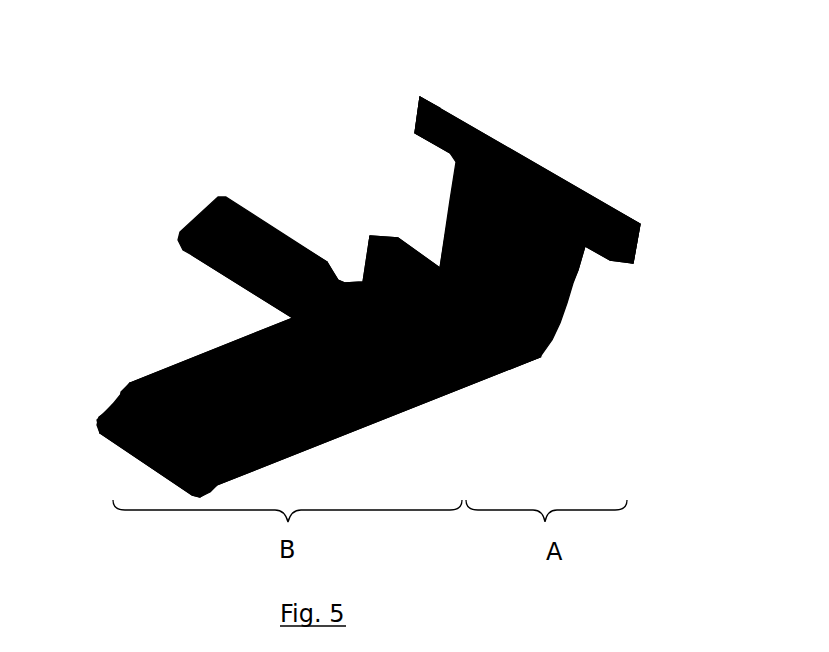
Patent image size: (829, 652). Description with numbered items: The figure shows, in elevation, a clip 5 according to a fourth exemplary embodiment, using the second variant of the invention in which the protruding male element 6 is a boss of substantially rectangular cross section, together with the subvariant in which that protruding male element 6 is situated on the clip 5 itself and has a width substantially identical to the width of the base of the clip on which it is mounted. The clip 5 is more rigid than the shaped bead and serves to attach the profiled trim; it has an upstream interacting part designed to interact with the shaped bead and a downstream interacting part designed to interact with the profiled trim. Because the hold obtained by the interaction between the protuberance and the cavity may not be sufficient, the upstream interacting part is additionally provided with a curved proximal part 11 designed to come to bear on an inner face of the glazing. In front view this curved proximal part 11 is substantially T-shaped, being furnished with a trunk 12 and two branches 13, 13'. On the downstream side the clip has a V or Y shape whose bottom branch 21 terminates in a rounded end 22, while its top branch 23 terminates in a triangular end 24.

The clip 5 is at (205, 118).
The protruding male element 6 is at (397, 235).
The curved proximal part 11 is at (575, 278).
The trunk 12 is at (553, 170).
The branch 13 is at (674, 214).
The branch 13' is at (423, 73).
The bottom branch 21 is at (337, 435).
The rounded end 22 is at (125, 450).
The top branch 23 is at (349, 282).
The triangular end 24 is at (198, 265).